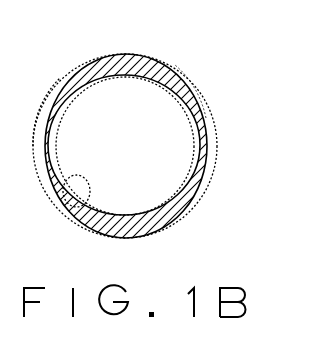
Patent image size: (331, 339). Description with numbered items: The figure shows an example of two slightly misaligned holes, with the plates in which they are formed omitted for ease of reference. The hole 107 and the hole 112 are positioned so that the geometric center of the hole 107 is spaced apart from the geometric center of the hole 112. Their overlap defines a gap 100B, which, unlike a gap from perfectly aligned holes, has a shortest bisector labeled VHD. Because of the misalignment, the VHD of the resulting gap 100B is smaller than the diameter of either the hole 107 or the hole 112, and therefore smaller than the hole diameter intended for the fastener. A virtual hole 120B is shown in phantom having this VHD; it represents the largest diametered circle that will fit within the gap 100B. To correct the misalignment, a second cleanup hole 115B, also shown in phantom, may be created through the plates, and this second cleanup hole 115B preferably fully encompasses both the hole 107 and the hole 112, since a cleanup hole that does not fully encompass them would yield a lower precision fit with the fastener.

The gap 100B is at (203, 195).
The hole 107 is at (167, 98).
The virtual hole diameter VHD is at (125, 77).
The second cleanup hole 115B is at (35, 112).
The virtual hole 120B is at (206, 117).
The hole 112 is at (82, 207).